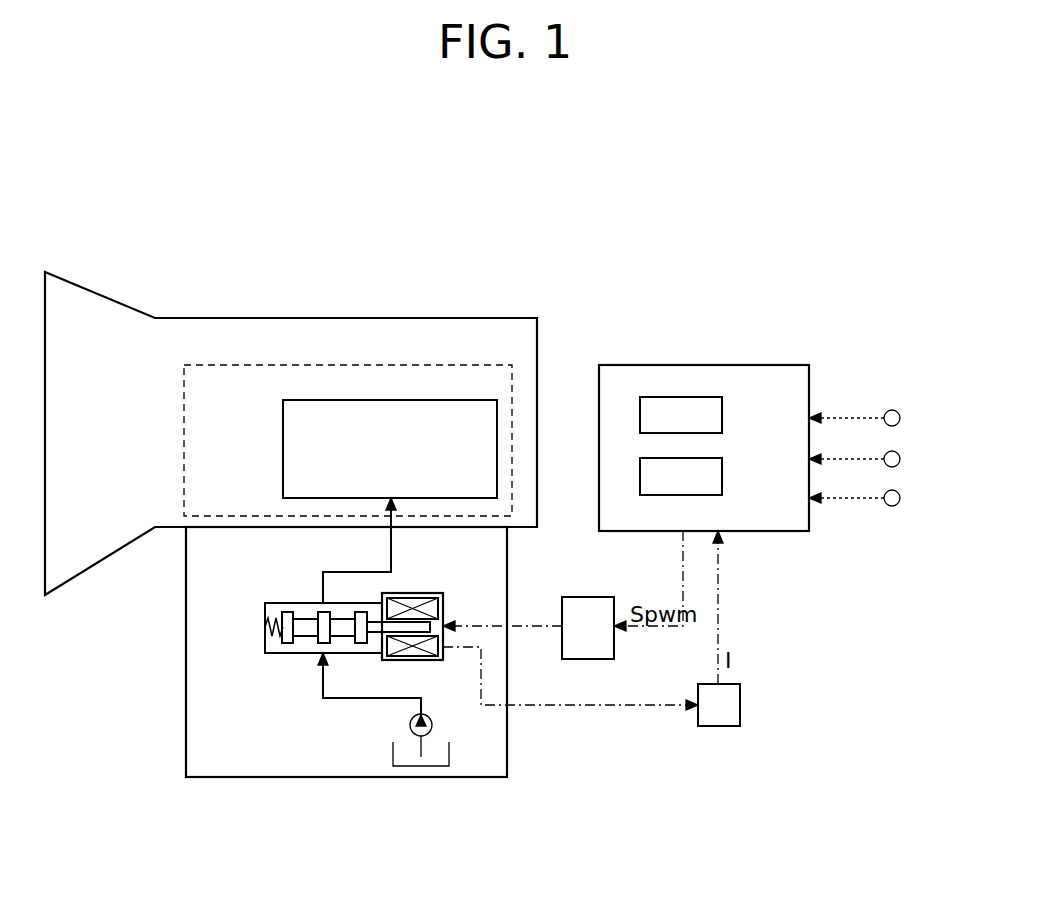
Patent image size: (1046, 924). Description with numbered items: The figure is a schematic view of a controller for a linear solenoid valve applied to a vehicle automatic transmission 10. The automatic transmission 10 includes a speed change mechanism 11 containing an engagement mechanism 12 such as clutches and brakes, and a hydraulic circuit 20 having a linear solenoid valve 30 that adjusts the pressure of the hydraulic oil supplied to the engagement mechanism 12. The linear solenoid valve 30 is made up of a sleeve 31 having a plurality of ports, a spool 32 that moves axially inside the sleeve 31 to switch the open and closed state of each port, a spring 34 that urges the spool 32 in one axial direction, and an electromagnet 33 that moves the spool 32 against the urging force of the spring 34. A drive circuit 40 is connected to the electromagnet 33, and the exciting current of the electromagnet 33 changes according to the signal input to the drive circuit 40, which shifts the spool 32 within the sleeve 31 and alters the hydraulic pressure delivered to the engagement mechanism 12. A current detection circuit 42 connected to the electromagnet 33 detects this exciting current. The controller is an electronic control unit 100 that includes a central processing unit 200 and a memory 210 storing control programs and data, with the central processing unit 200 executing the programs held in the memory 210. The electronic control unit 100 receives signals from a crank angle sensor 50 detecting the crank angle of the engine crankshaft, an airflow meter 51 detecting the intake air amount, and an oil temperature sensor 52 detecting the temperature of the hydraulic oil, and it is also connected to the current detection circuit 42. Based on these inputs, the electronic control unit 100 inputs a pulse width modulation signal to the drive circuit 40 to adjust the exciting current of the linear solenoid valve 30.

The automatic transmission 10 is at (345, 318).
The speed change mechanism 11 is at (184, 445).
The engagement mechanism 12 is at (283, 451).
The hydraulic circuit 20 is at (186, 656).
The linear solenoid valve 30 is at (246, 588).
The sleeve 31 is at (291, 603).
The spool 32 is at (307, 643).
The electromagnet 33 is at (417, 593).
The spring 34 is at (263, 625).
The drive circuit 40 is at (588, 660).
The current detection circuit 42 is at (740, 705).
The electronic control unit 100 is at (705, 365).
The central processing unit 200 is at (722, 413).
The memory 210 is at (722, 477).
The crank angle sensor 50 is at (900, 420).
The airflow meter 51 is at (900, 461).
The oil temperature sensor 52 is at (900, 500).